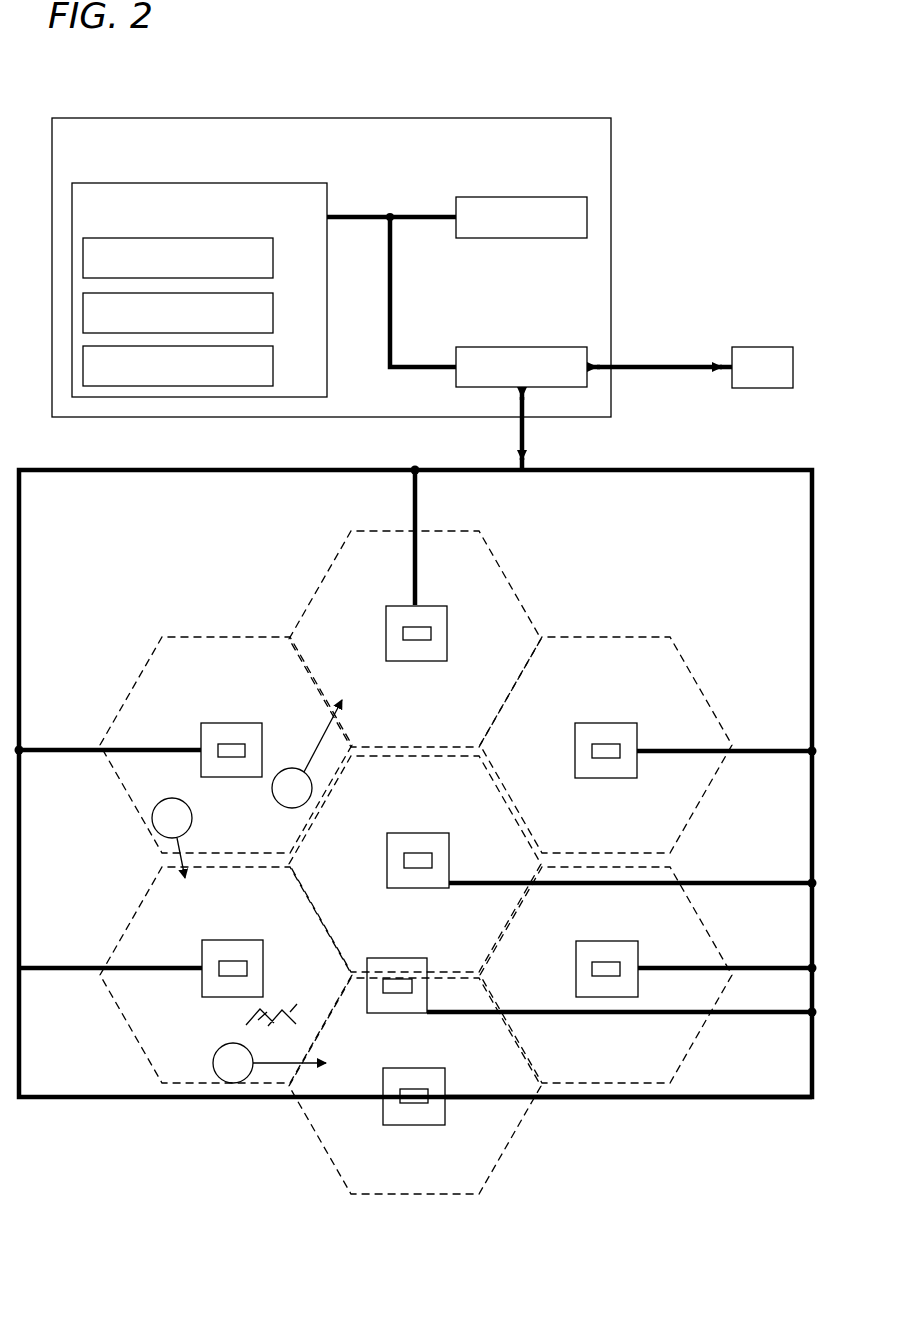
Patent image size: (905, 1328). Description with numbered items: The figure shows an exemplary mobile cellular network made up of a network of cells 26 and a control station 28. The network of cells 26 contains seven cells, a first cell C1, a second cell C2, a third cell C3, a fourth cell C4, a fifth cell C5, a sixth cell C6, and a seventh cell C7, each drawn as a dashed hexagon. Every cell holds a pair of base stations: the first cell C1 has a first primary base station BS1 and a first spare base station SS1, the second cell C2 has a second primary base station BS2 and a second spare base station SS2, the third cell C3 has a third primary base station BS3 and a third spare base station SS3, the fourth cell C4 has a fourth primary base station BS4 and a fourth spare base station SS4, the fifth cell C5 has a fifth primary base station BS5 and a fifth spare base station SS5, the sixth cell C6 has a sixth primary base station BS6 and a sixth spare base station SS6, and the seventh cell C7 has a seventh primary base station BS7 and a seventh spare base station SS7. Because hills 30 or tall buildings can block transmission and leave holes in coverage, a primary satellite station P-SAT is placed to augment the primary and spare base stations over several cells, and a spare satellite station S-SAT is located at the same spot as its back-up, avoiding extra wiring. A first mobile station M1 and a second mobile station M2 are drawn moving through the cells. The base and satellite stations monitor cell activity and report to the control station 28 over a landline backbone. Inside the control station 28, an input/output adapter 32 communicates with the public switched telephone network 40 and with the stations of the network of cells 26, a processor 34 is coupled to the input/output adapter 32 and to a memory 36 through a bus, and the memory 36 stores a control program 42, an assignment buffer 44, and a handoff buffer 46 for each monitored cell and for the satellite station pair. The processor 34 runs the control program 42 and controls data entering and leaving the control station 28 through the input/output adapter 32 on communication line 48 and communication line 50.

The control station 28 is at (334, 118).
The memory 36 is at (285, 183).
The handoff buffer 46 is at (275, 262).
The assignment buffer 44 is at (275, 316).
The control program 42 is at (275, 369).
The processor 34 is at (526, 197).
The input/output (I/O) adapter 32 is at (526, 347).
The communication line 50 is at (677, 364).
The public switched telephone network (PSTN) 40 is at (767, 346).
The communication line 48 is at (530, 443).
The network of cells 26 is at (711, 532).
The hills 30 is at (290, 1010).
The first cell C1 is at (148, 668).
The second cell C2 is at (138, 1035).
The third cell C3 is at (340, 548).
The fourth cell C4 is at (417, 1195).
The fifth cell C5 is at (401, 786).
The sixth cell C6 is at (605, 635).
The seventh cell C7 is at (695, 1045).
The first primary base station BS1 is at (233, 723).
The second primary base station BS2 is at (235, 940).
The third primary base station BS3 is at (386, 634).
The fourth primary base station BS4 is at (383, 1094).
The fifth primary base station BS5 is at (387, 859).
The sixth primary base station BS6 is at (607, 723).
The seventh primary base station BS7 is at (608, 940).
The first spare base station SS1 is at (228, 757).
The second spare base station SS2 is at (217, 976).
The third spare base station SS3 is at (431, 635).
The fourth spare base station SS4 is at (411, 1103).
The fifth spare base station SS5 is at (432, 857).
The sixth spare base station SS6 is at (603, 759).
The seventh spare base station SS7 is at (592, 968).
The primary satellite station P-SAT is at (401, 958).
The spare satellite station S-SAT is at (398, 993).
The first mobile station M1 is at (172, 838).
The second mobile station M2 is at (277, 891).